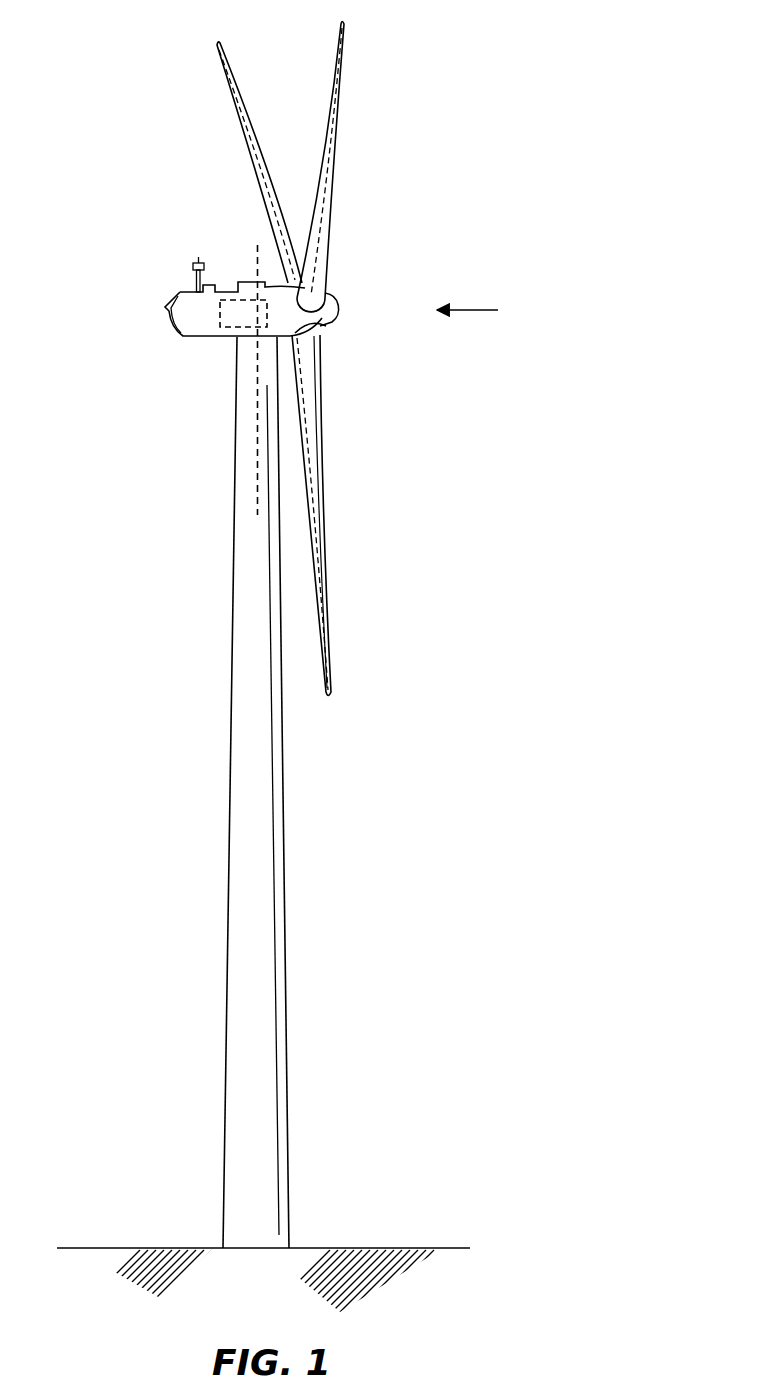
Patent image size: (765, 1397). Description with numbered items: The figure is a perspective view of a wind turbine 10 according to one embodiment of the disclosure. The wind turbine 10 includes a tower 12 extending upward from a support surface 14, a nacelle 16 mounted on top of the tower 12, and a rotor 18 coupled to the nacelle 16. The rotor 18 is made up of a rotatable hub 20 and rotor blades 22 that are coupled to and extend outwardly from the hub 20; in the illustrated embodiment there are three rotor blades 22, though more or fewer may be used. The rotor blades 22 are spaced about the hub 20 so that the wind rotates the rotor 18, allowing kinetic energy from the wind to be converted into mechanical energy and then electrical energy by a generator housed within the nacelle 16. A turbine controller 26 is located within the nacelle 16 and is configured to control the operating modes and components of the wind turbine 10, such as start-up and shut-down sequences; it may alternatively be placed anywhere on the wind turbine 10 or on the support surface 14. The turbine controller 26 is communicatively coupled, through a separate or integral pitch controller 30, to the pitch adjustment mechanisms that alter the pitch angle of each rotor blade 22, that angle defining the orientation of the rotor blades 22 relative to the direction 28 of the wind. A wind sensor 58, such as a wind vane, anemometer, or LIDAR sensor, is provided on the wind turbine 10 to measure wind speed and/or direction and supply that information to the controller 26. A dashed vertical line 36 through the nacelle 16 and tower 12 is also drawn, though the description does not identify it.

The wind turbine 10 is at (446, 110).
The tower 12 is at (242, 916).
The support surface 14 is at (140, 1248).
The nacelle 16 is at (212, 340).
The rotor 18 is at (348, 284).
The rotatable hub 20 is at (339, 318).
The rotor blade 22 is at (326, 151).
The turbine controller 26 is at (229, 290).
The direction of the wind 28 is at (471, 310).
The pitch controller 30 is at (333, 305).
The yaw axis 36 is at (257, 457).
The wind sensor 58 is at (195, 281).